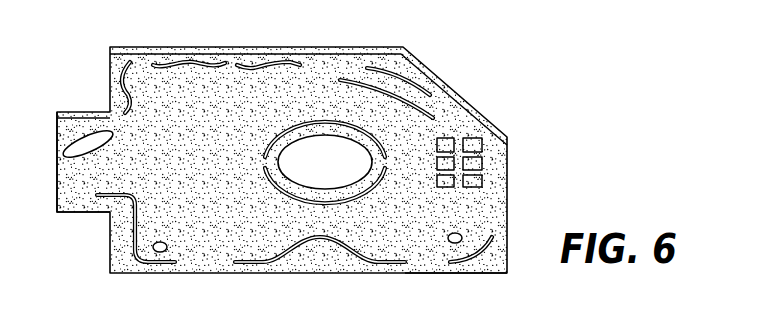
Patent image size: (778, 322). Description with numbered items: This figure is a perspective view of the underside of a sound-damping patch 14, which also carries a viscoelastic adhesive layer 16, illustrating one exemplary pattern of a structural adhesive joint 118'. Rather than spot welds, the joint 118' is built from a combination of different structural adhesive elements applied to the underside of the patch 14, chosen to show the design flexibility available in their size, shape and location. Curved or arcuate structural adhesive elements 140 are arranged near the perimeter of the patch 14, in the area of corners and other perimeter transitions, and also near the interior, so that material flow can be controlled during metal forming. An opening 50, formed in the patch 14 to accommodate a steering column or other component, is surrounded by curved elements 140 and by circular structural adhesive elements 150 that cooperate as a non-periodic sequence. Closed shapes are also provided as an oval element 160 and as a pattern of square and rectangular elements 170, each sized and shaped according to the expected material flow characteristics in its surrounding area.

The sound-damping patch 14 is at (109, 61).
The viscoelastic adhesive layer 16 is at (78, 187).
The opening 50 is at (338, 174).
The structural adhesive joint 118' is at (456, 285).
The curved structural adhesive elements 140 is at (188, 62).
The circular structural adhesive elements 150 is at (167, 248).
The oval structural adhesive element 160 is at (100, 136).
The square and rectangular structural adhesive elements 170 is at (483, 167).